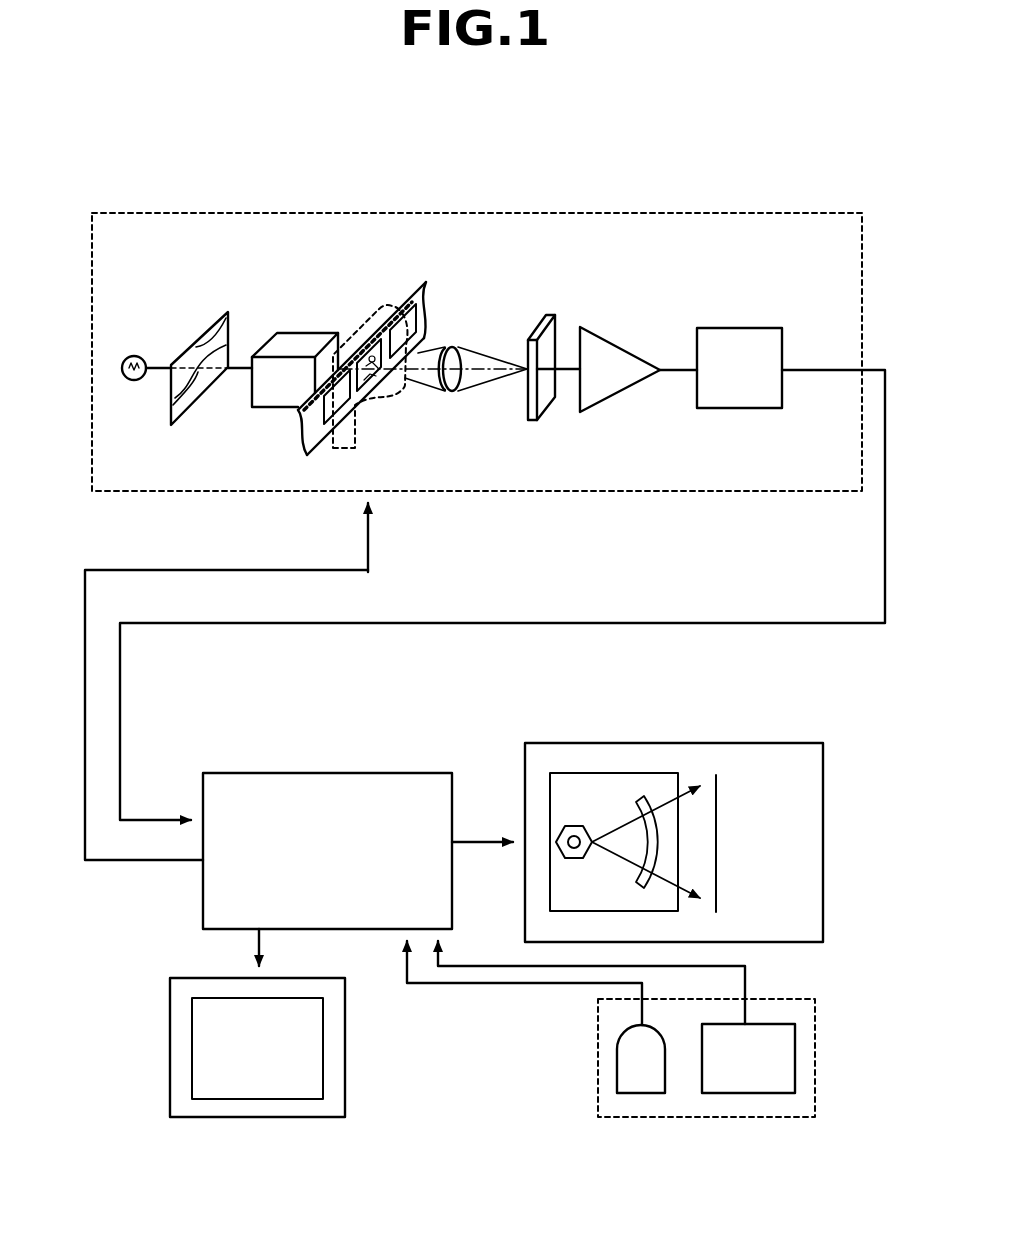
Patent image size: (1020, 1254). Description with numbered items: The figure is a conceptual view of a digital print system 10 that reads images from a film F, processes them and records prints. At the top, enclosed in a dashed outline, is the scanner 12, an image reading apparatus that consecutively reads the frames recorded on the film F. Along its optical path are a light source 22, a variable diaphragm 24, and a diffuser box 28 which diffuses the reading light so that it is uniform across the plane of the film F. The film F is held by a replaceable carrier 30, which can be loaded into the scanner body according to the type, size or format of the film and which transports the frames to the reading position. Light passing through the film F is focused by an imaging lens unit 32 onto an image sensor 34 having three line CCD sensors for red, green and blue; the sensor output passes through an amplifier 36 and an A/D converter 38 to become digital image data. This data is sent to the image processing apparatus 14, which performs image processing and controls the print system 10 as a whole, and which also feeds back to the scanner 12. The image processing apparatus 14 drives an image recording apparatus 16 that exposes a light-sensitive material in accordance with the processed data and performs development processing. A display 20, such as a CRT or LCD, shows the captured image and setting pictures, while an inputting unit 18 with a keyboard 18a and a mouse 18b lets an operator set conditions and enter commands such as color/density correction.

The digital print system 10 is at (737, 176).
The scanner 12 is at (304, 213).
The image processing apparatus 14 is at (325, 773).
The image recording apparatus 16 is at (668, 743).
The inputting unit 18 is at (705, 1106).
The keyboard 18a is at (750, 1094).
The mouse 18b is at (633, 1094).
The display 20 is at (247, 1118).
The light source 22 is at (134, 356).
The variable diaphragm 24 is at (208, 331).
The diffuser box 28 is at (293, 355).
The carrier 30 is at (400, 400).
The imaging lens unit 32 is at (450, 347).
The image sensor 34 is at (548, 340).
The amplifier 36 is at (620, 394).
The A/D converter 38 is at (737, 340).
The film F is at (424, 290).